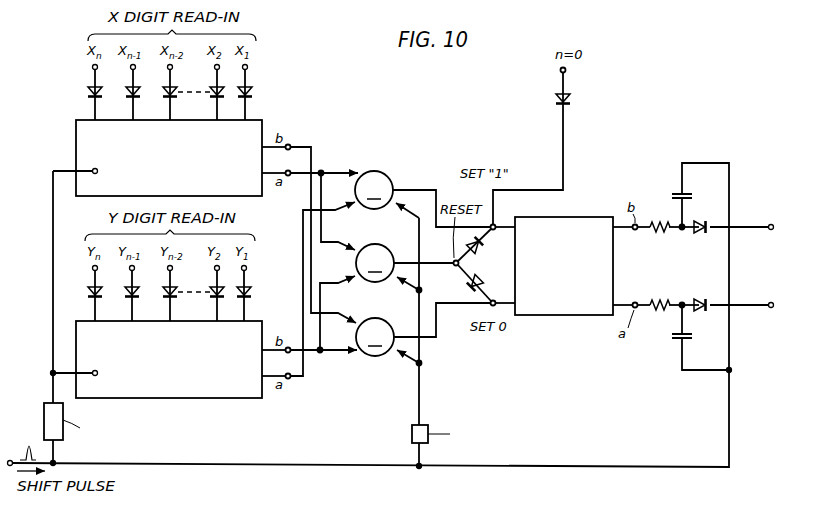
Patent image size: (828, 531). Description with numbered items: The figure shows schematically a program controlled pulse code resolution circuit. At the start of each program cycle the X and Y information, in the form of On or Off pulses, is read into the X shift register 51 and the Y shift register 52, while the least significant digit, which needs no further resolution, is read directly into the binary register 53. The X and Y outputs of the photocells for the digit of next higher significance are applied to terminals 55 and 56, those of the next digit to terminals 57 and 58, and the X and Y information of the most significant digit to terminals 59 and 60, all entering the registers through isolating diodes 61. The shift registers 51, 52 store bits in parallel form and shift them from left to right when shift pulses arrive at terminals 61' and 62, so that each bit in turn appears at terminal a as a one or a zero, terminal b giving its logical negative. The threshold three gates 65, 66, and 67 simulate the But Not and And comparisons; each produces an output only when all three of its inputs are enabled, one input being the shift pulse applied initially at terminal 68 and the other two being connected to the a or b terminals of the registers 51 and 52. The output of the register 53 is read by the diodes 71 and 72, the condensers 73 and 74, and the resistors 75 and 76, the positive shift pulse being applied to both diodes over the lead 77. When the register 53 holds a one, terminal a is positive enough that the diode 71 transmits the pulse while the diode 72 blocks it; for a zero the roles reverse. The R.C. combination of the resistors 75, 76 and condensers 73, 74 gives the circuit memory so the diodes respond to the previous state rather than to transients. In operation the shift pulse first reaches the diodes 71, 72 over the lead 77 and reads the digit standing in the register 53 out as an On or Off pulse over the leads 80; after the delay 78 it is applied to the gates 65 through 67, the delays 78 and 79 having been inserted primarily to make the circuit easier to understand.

The X shift register 51 is at (76, 134).
The Y shift register 52 is at (76, 330).
The binary register 53 is at (582, 216).
The terminal 55 is at (248, 68).
The terminal 56 is at (247, 269).
The terminal 57 is at (214, 68).
The terminal 58 is at (214, 269).
The terminal 59 is at (91, 68).
The terminal 60 is at (92, 269).
The isolating diodes 61 is at (329, 192).
The shift pulse terminal 61' is at (80, 156).
The shift pulse terminal 62 is at (96, 370).
The threshold 3 gate 65 is at (379, 244).
The threshold 3 gate 66 is at (378, 170).
The threshold 3 gate 67 is at (378, 318).
The shift pulse terminal 68 is at (10, 458).
The diode 71 is at (705, 298).
The diode 72 is at (705, 236).
The condenser 73 is at (672, 340).
The condenser 74 is at (672, 195).
The resistor 75 is at (660, 297).
The resistor 76 is at (655, 238).
The lead 77 is at (728, 426).
The delay 78 is at (412, 434).
The delay 79 is at (44, 403).
The leads 80 is at (745, 227).